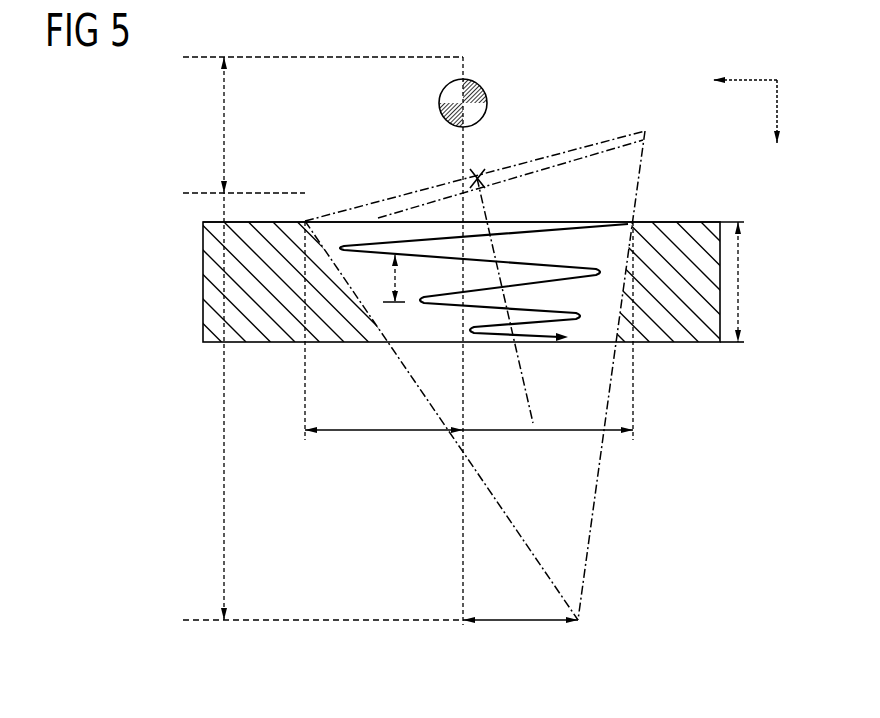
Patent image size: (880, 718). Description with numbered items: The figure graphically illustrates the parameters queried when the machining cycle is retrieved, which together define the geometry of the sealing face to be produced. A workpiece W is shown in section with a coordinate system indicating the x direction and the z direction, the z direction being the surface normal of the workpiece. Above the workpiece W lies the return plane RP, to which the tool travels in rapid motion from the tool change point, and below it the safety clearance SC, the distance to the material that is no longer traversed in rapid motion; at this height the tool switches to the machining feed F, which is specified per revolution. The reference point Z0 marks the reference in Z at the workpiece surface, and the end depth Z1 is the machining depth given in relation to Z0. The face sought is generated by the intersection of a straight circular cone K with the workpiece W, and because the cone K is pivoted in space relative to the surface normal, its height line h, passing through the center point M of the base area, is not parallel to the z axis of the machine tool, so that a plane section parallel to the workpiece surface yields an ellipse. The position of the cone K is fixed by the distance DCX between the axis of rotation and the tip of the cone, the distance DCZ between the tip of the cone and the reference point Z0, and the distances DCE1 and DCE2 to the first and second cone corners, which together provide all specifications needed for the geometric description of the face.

The return plane RP is at (309, 61).
The safety clearance SC is at (244, 201).
The reference point Z0 is at (203, 223).
The end depth Z1 is at (754, 282).
The workpiece W is at (679, 343).
The straight circular cone K is at (641, 175).
The center point of the base area M is at (483, 173).
The height line h is at (522, 383).
The machining feed F is at (390, 278).
The distance between tip of cone and Z0 DCZ is at (318, 338).
The distance to cone corner 1 DCE1 is at (384, 345).
The distance to cone corner 2 DCE2 is at (548, 345).
The distance between axis of rotation and tip of cone DCX is at (520, 636).
The X direction x is at (745, 65).
The Z direction z is at (786, 116).